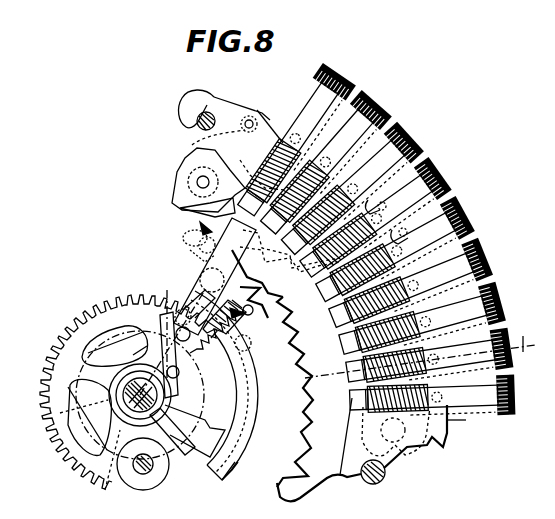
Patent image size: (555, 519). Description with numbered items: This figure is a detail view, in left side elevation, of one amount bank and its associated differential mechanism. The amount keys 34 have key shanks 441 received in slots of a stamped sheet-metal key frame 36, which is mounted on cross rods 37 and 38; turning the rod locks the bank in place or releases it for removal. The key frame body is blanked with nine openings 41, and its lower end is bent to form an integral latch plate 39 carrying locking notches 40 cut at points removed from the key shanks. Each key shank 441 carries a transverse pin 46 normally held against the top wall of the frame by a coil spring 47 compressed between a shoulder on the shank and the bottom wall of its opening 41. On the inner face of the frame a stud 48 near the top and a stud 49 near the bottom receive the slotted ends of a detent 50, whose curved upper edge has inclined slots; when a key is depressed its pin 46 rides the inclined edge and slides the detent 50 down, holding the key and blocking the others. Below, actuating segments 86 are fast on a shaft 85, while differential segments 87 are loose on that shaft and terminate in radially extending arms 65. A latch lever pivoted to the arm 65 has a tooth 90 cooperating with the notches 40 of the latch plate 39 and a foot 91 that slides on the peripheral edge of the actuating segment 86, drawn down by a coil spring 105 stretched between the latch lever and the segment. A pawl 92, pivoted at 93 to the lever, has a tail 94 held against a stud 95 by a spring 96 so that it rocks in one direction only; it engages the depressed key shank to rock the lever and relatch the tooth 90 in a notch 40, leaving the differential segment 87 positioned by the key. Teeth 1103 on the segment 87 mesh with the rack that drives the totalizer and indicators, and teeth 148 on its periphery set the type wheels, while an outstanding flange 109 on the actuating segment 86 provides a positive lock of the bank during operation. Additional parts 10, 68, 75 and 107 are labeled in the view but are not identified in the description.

The axis line 10 is at (299, 373).
The amount keys 34 is at (413, 134).
The key frame 36 is at (278, 107).
The cross rod 37 is at (199, 110).
The cross rod 38 is at (380, 485).
The latch plate 39 is at (306, 405).
The locking notches 40 is at (295, 464).
The openings 41 is at (340, 289).
The transverse pins 46 is at (400, 230).
The coil springs 47 is at (376, 203).
The stud 48 is at (200, 180).
The stud 49 is at (398, 458).
The detent 50 is at (444, 448).
The radially extending arms 65 is at (252, 262).
The roller 68 is at (147, 472).
The slot 75 is at (90, 426).
The shaft 85 is at (156, 438).
The actuating segments 86 is at (216, 472).
The differential segments 87 is at (58, 414).
The tooth 90 is at (259, 294).
The foot 91 is at (258, 347).
The pawl 92 is at (190, 209).
The pivot 93 is at (190, 238).
The tail 94 is at (196, 246).
The stud 95 is at (213, 243).
The spring 96 is at (215, 228).
The coil spring 105 is at (203, 344).
The sector arm 107 is at (224, 406).
The outstanding flange 109 is at (240, 472).
The teeth 148 is at (110, 300).
The key shanks 441 is at (310, 104).
The teeth 1103 is at (75, 470).